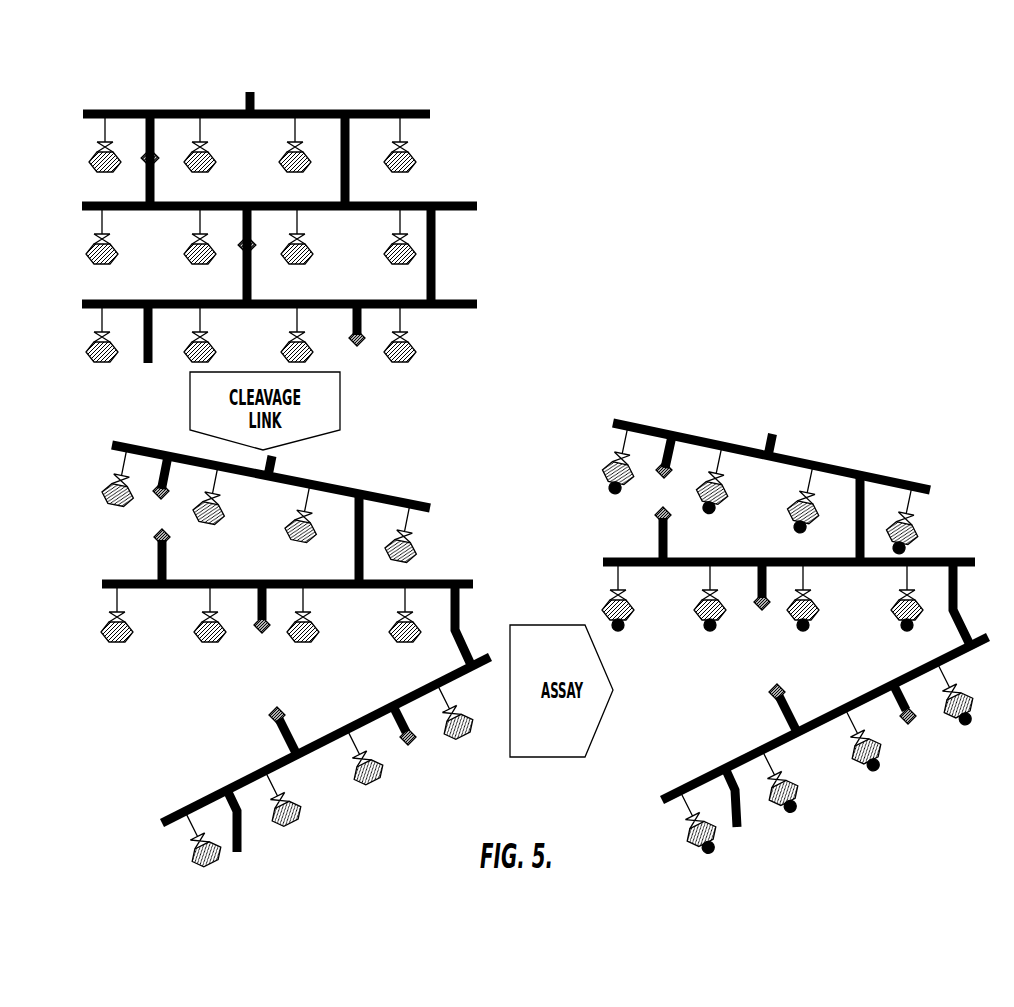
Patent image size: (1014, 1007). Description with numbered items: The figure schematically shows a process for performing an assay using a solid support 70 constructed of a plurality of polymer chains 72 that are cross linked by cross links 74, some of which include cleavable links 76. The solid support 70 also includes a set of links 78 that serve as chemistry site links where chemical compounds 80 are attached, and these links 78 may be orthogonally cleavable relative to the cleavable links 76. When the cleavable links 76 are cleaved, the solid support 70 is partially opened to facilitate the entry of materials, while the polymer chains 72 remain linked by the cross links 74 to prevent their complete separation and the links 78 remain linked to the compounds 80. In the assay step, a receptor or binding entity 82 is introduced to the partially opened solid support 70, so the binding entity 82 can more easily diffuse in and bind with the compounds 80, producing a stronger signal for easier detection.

The solid support 70 is at (448, 116).
The polymer chains 72 is at (278, 112).
The cross links 74 is at (350, 155).
The cleavable links 76 is at (152, 152).
The links 78 is at (207, 148).
The chemical compounds 80 is at (411, 346).
The binding entity 82 is at (727, 484).